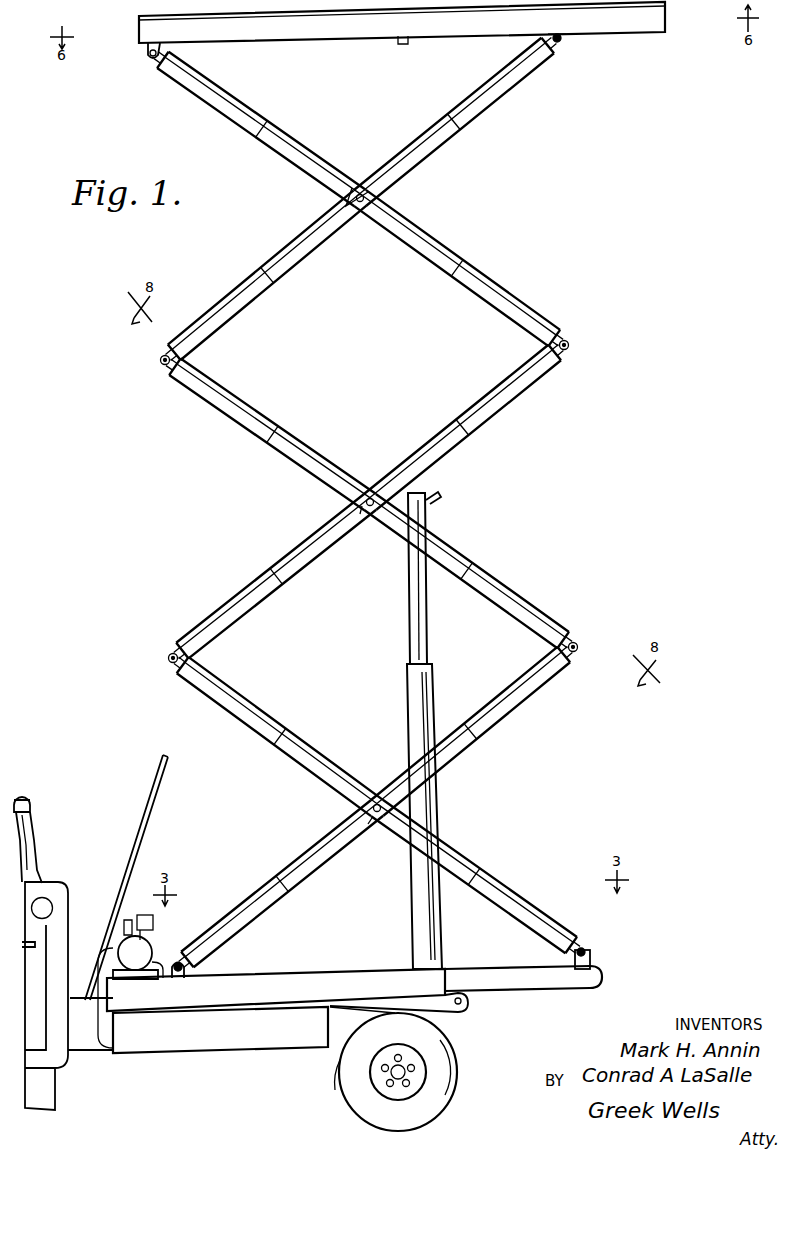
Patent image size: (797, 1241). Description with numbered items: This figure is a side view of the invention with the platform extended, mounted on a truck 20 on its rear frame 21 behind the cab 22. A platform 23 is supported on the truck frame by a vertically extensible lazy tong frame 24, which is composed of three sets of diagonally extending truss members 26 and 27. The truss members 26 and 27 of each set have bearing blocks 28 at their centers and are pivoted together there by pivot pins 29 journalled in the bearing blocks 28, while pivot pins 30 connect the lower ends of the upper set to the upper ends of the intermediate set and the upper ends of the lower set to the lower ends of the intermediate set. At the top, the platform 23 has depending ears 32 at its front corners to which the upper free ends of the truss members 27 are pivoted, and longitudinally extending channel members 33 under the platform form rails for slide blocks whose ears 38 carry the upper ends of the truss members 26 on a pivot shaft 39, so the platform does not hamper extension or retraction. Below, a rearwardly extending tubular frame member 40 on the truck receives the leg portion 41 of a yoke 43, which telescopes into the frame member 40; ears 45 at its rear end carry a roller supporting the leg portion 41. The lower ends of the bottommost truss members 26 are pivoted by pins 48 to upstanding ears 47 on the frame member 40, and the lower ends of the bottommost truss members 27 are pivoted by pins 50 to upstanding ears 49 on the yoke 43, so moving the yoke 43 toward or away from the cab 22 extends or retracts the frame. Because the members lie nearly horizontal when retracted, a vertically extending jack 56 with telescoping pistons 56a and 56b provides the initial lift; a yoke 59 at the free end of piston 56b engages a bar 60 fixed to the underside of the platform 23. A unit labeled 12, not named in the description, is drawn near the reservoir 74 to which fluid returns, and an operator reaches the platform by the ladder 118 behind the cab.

The hydraulic pump 12 is at (146, 962).
The truck 20 is at (56, 860).
The rear frame 21 is at (92, 1052).
The cab 22 is at (62, 910).
The platform 23 is at (672, 23).
The lazy tong frame 24 is at (242, 436).
The truss member 26 is at (262, 274).
The truss member 27 is at (480, 272).
The bearing block 28 is at (360, 192).
The pivot pin 29 is at (355, 204).
The pivot pin 30 is at (161, 362).
The depending ear 32 is at (148, 56).
The channel member 33 is at (324, 42).
The ear 38 is at (567, 45).
The pivot shaft 39 is at (558, 46).
The tubular frame member 40 is at (312, 968).
The leg portion 41 is at (536, 990).
The yoke 43 is at (579, 988).
The ear 45 is at (463, 1006).
The upstanding ear 47 is at (186, 973).
The pin 48 is at (178, 960).
The upstanding ear 49 is at (592, 962).
The pin 50 is at (586, 950).
The jack 56 is at (414, 923).
The piston 56a is at (409, 718).
The piston 56b is at (410, 620).
The yoke 59 is at (432, 501).
The bar 60 is at (408, 42).
The reservoir 74 is at (208, 1044).
The ladder 118 is at (142, 838).